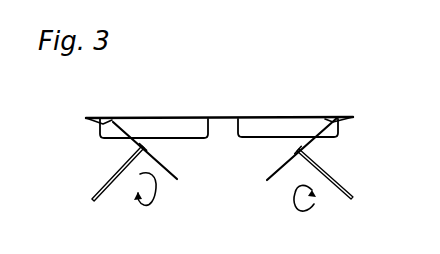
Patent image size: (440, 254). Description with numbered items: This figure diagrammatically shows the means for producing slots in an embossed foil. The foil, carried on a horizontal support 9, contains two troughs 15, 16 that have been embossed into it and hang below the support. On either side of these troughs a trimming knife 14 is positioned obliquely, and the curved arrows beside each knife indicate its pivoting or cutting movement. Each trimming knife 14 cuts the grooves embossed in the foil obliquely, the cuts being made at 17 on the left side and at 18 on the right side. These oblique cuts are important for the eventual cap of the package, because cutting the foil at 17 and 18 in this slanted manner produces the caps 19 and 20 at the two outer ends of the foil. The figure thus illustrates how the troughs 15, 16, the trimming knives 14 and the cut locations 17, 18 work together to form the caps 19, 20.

The support rail 9 is at (133, 117).
The trimming knife 14 is at (172, 178).
The trough 15 is at (177, 125).
The trough 16 is at (273, 123).
The cutting location 17 is at (108, 140).
The cutting location 18 is at (322, 133).
The cap 19 is at (98, 121).
The cap 20 is at (342, 129).